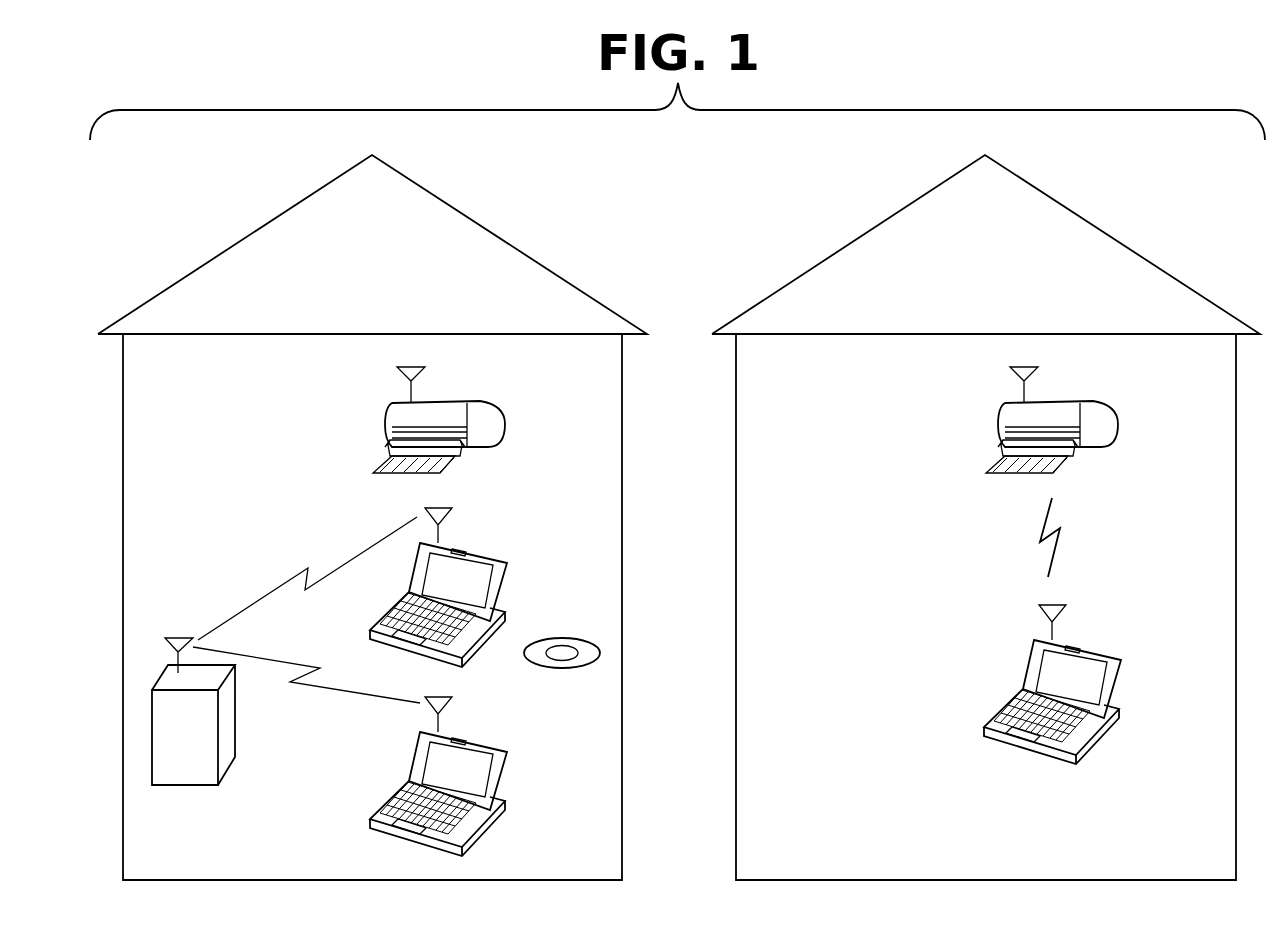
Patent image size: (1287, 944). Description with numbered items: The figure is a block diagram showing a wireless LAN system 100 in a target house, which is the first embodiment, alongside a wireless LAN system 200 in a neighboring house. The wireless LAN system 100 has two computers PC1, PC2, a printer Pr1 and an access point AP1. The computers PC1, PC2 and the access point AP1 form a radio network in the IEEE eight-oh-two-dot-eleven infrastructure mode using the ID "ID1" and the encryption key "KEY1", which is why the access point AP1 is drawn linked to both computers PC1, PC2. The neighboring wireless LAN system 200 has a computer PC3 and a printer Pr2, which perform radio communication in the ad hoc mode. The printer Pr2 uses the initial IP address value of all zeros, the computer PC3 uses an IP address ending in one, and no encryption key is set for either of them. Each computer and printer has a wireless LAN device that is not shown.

The wireless LAN system 100 is at (188, 234).
The wireless LAN system 200 is at (803, 236).
The printer Pr1 is at (460, 420).
The computer PC1 is at (461, 587).
The computer PC2 is at (461, 776).
The access point AP1 is at (193, 731).
The printer Pr2 is at (1074, 420).
The computer PC3 is at (1075, 684).